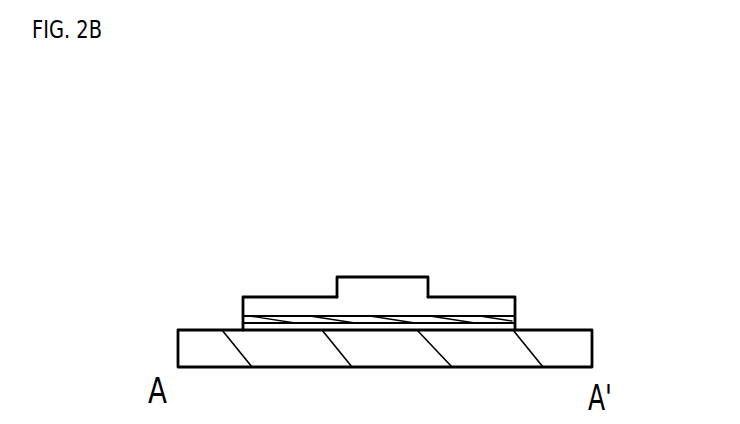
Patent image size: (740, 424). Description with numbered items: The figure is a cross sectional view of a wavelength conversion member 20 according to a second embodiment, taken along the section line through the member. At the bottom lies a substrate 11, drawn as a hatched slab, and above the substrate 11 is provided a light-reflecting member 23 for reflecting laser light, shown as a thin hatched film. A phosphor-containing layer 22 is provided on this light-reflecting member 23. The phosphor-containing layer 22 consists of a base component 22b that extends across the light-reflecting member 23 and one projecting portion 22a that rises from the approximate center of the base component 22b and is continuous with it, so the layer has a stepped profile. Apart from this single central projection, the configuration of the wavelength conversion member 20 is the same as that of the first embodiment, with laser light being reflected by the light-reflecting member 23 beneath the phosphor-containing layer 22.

The wavelength conversion member 20 is at (587, 269).
The substrate 11 is at (203, 348).
The phosphor-containing layer 22 is at (433, 147).
The projecting portion 22a is at (378, 283).
The base component 22b is at (290, 310).
The light-reflecting member 23 is at (516, 320).